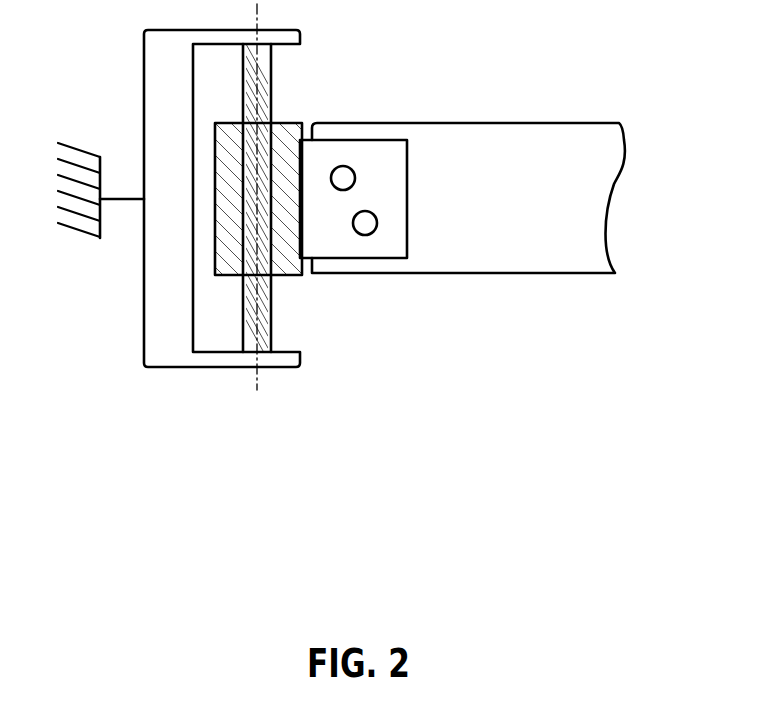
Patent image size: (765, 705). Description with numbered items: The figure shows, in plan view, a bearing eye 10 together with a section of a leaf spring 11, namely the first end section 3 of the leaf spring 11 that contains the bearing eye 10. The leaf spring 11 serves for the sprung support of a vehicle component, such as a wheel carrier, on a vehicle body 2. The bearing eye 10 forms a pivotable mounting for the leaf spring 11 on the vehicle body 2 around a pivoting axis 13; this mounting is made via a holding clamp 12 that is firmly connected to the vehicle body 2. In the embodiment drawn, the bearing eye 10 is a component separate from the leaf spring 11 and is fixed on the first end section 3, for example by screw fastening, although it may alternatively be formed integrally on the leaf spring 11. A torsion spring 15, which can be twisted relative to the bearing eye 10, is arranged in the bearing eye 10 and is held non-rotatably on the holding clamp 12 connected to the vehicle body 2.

The holding clamp 12 is at (150, 125).
The vehicle body 2 is at (78, 190).
The bearing eye 10 is at (290, 119).
The torsion spring 15 is at (272, 313).
The pivoting axis 13 is at (258, 376).
The leaf spring 11 is at (612, 185).
The first end section 3 is at (623, 285).